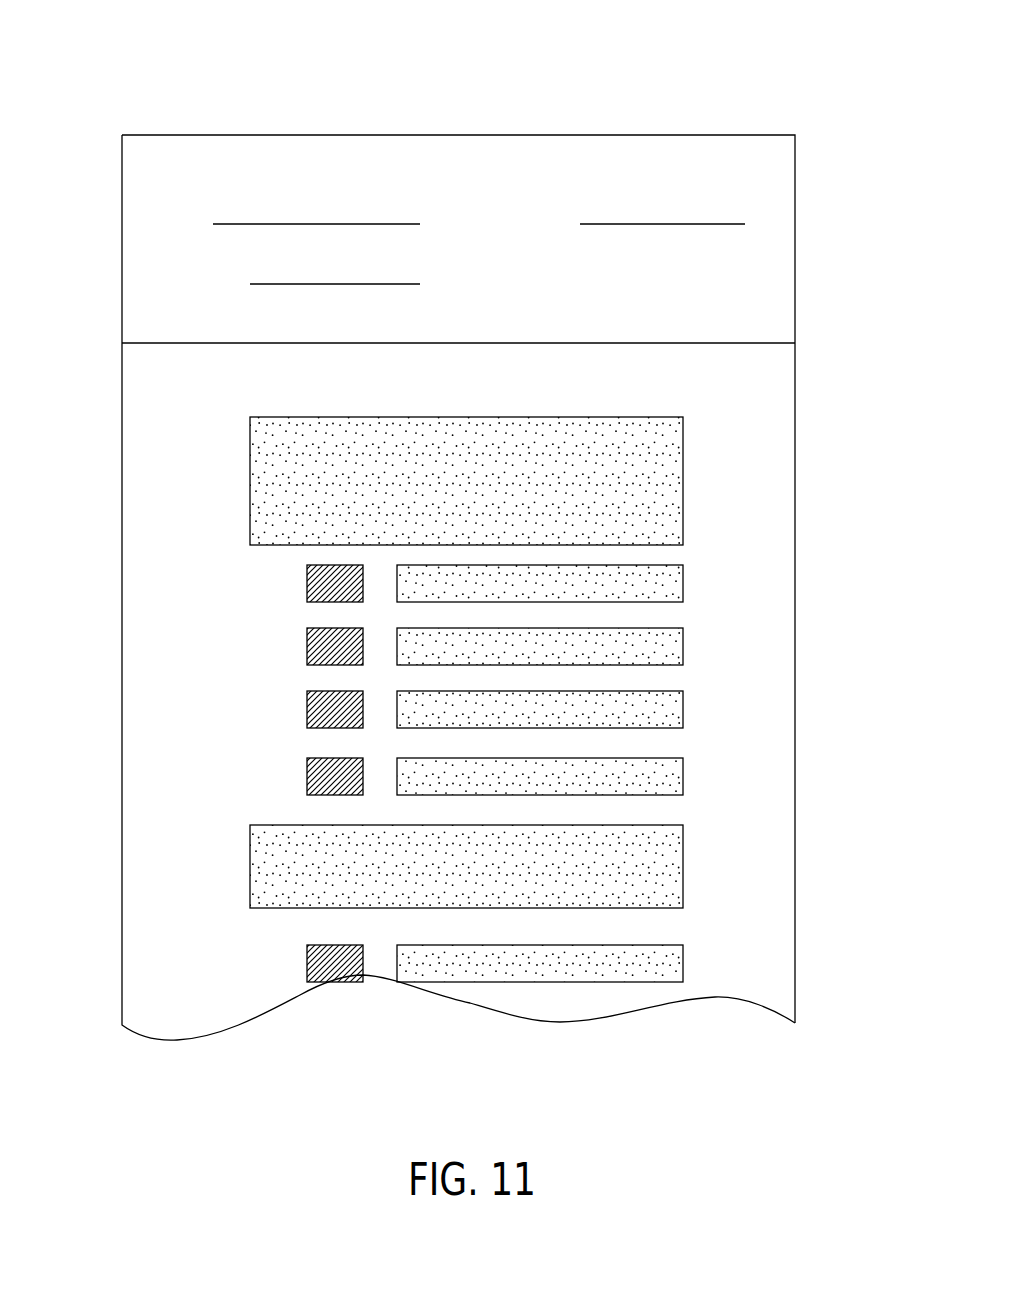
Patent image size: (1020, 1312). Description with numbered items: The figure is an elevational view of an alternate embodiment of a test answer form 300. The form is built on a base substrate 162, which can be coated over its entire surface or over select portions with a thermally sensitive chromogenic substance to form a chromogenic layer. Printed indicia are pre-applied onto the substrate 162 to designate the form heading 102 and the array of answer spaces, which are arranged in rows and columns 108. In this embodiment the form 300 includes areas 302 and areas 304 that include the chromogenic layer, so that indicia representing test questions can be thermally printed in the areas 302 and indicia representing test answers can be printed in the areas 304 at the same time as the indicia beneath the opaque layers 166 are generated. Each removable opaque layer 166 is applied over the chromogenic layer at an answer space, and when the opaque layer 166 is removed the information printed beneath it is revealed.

The test answer form 300 is at (802, 92).
The form heading 102 is at (105, 135).
The base substrate 162 is at (146, 540).
The areas 302 is at (667, 516).
The areas 304 is at (667, 583).
The columns 108 is at (285, 563).
The opaque layer 166 is at (306, 795).